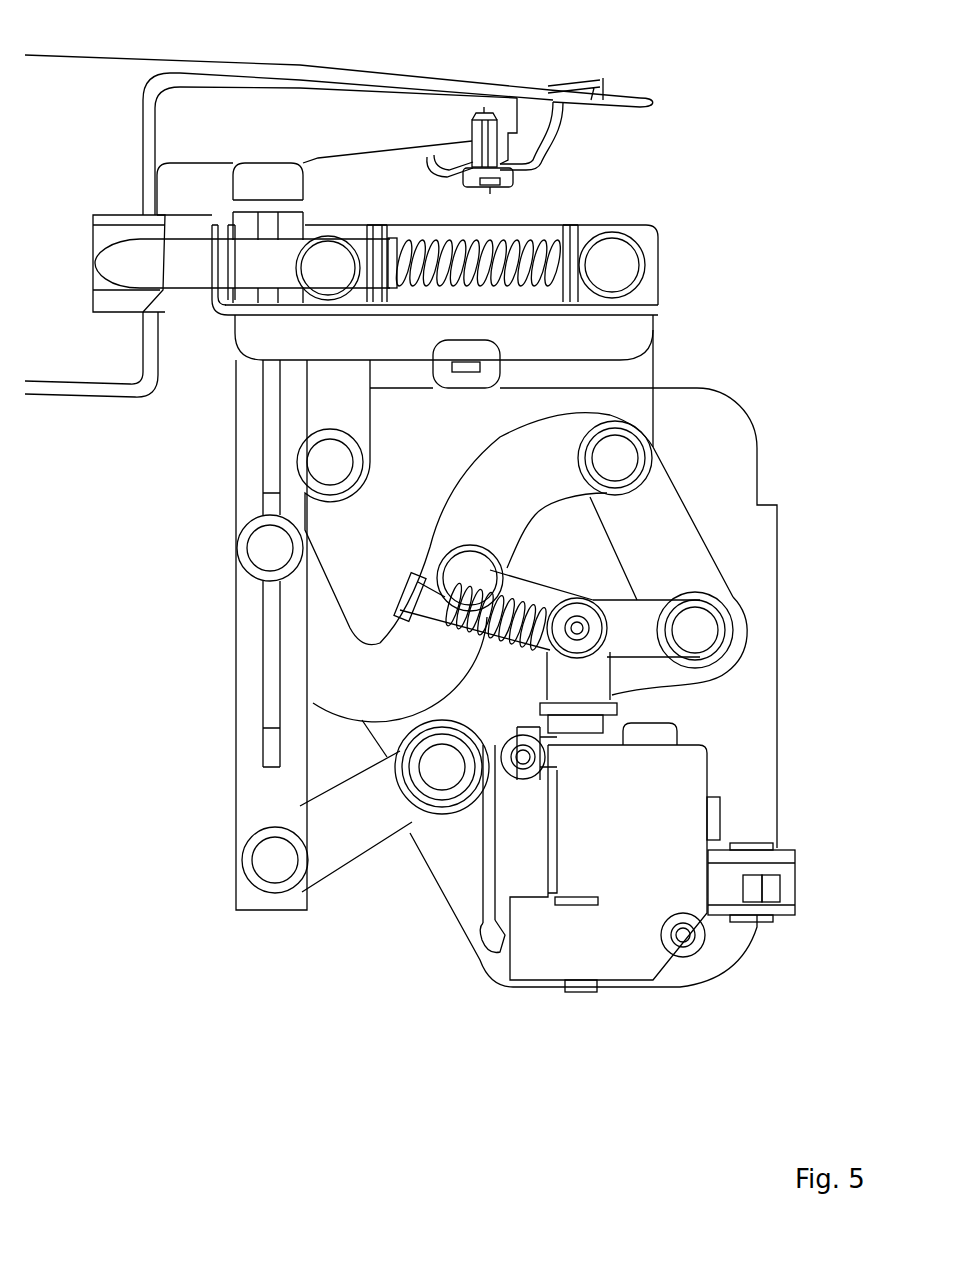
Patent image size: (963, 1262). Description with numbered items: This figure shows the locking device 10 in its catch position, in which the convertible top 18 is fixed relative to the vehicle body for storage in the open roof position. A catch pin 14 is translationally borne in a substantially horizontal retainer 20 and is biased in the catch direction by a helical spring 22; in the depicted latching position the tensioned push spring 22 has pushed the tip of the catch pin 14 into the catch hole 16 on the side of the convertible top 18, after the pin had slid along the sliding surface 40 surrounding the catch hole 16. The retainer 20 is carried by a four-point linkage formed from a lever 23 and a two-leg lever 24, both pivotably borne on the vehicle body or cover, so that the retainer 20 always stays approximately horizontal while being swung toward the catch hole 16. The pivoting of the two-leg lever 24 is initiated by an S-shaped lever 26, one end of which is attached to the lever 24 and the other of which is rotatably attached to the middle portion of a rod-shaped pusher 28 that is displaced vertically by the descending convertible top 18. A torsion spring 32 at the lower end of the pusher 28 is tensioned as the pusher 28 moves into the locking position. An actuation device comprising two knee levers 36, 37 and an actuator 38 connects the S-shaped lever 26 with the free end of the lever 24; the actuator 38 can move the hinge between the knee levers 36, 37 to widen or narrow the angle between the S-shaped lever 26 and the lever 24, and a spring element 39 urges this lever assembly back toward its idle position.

The locking device 10 is at (707, 168).
The catch pin 14 is at (180, 277).
The catch hole 16 is at (103, 233).
The convertible top 18 is at (290, 58).
The retainer 20 is at (633, 233).
The helical spring 22 is at (528, 240).
The lever 23 is at (363, 420).
The two-leg lever 24 is at (640, 367).
The S-shaped lever 26 is at (478, 463).
The rod-shaped pusher 28 is at (250, 763).
The torsion spring 32 is at (337, 825).
The knee lever 36 is at (640, 643).
The knee lever 37 is at (517, 587).
The actuator 38 is at (557, 673).
The spring element 39 is at (510, 640).
The sliding surface 40 is at (157, 320).